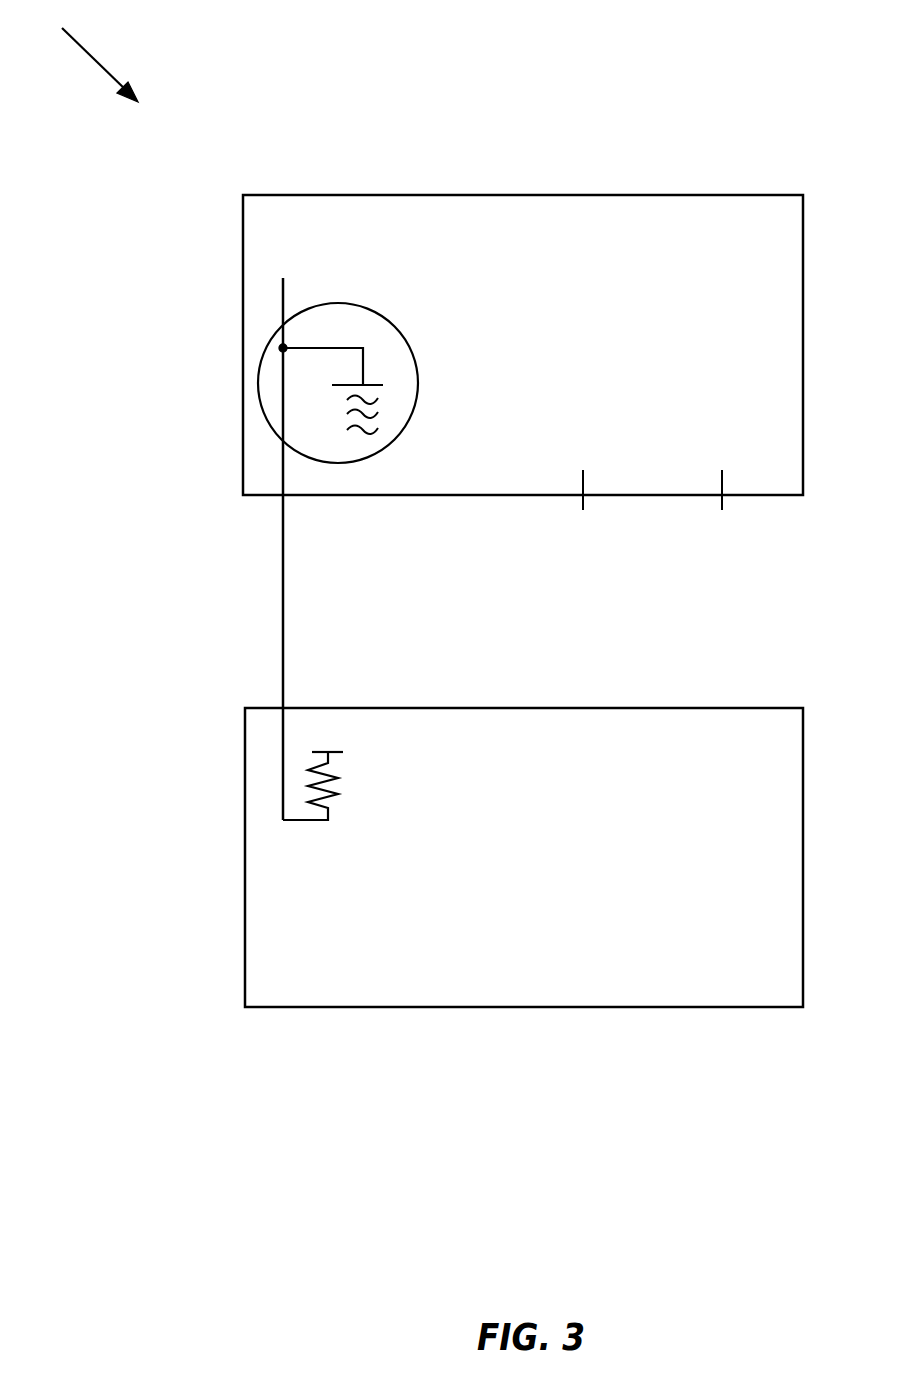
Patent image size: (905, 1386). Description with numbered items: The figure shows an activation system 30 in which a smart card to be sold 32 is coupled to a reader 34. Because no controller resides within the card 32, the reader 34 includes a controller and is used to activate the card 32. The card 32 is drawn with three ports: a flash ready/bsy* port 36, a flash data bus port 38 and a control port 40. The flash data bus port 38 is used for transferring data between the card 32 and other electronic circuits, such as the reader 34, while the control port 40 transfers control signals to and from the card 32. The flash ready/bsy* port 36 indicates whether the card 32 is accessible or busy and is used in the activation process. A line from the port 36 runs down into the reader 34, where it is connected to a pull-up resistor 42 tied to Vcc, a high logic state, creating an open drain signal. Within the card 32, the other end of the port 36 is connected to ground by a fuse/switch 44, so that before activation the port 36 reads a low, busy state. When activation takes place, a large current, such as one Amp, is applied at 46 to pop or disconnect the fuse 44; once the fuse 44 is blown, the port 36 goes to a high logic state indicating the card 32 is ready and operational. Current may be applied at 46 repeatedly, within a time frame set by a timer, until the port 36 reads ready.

The activation system 30 is at (85, 60).
The smart card to be sold 32 is at (534, 358).
The reader 34 is at (513, 953).
The flash ready/bsy* port 36 is at (283, 578).
The flash data bus port 38 is at (583, 512).
The control port 40 is at (722, 512).
The pull-up resistor 42 is at (337, 793).
The fuse/switch 44 is at (337, 303).
The current application point 46 is at (343, 348).